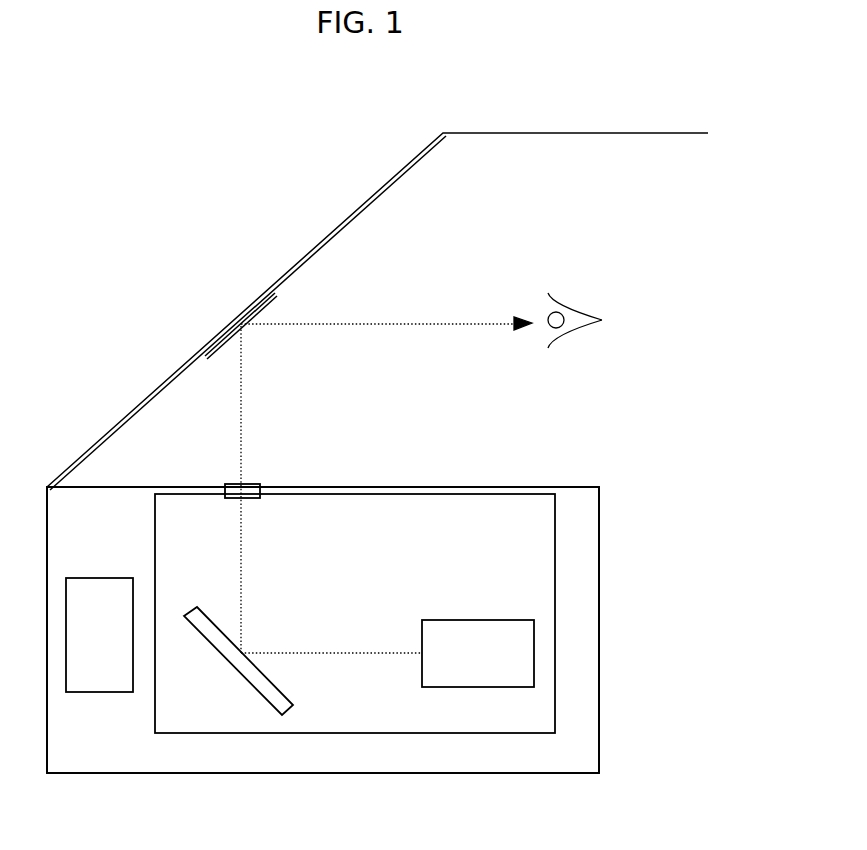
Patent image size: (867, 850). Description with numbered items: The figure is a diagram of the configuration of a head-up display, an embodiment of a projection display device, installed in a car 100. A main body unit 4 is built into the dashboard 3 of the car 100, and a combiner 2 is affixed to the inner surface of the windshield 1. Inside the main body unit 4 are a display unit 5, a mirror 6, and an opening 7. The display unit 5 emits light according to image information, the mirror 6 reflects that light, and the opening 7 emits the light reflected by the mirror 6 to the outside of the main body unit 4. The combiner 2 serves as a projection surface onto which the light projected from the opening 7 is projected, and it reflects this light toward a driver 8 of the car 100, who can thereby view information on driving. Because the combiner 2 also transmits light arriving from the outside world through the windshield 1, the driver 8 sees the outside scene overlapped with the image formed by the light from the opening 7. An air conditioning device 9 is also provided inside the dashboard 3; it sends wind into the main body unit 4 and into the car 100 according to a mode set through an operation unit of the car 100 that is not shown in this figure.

The car 100 is at (281, 162).
The windshield 1 is at (344, 221).
The combiner 2 is at (261, 303).
The dashboard 3 is at (590, 488).
The main body unit 4 is at (555, 576).
The display unit 5 is at (488, 620).
The mirror 6 is at (194, 607).
The opening 7 is at (252, 484).
The driver 8 is at (563, 312).
The air conditioning device 9 is at (90, 578).